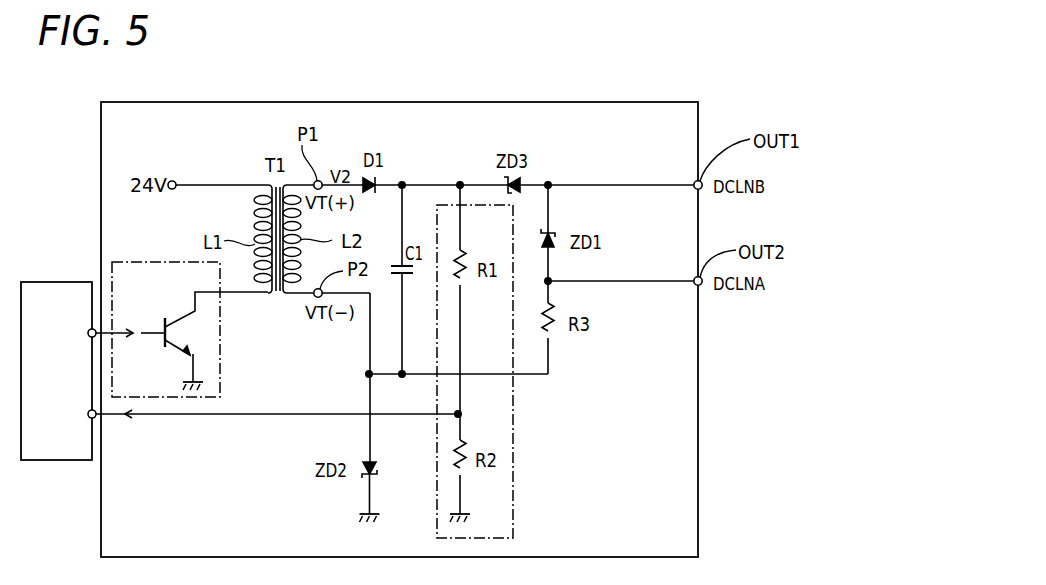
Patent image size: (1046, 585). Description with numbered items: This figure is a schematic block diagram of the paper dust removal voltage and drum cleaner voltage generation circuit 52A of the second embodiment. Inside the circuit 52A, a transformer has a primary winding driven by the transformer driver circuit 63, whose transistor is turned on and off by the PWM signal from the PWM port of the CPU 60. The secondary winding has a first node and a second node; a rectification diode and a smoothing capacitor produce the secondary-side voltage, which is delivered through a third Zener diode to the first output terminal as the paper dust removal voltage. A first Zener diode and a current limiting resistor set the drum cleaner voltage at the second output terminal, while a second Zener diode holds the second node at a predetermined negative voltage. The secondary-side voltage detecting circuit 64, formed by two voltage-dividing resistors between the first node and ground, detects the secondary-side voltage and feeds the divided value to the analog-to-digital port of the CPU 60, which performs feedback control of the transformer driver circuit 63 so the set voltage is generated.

The paper dust removal voltage and drum cleaner voltage generation circuit 52A is at (610, 102).
The CPU 60 is at (68, 282).
The transformer driver circuit 63 is at (123, 259).
The secondary-side voltage detecting circuit 64 is at (513, 386).